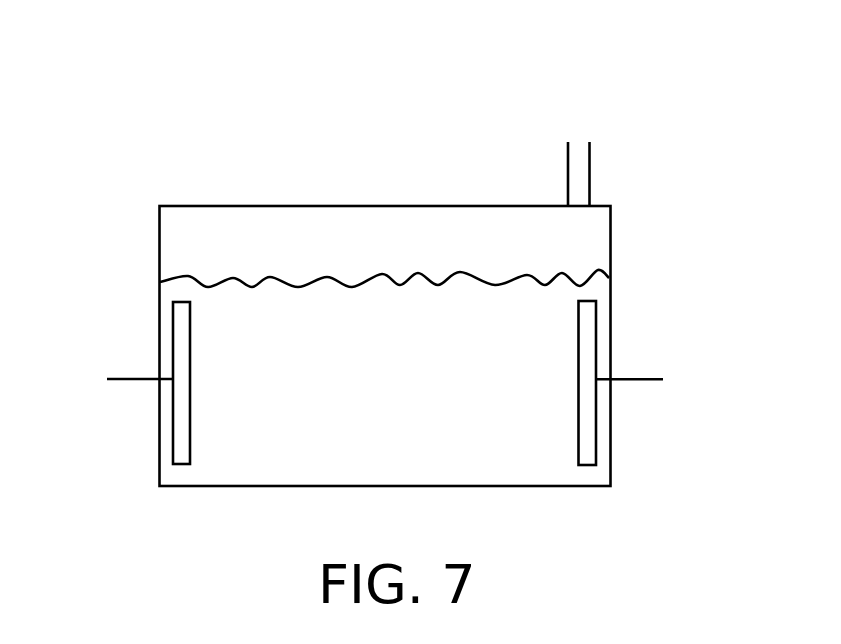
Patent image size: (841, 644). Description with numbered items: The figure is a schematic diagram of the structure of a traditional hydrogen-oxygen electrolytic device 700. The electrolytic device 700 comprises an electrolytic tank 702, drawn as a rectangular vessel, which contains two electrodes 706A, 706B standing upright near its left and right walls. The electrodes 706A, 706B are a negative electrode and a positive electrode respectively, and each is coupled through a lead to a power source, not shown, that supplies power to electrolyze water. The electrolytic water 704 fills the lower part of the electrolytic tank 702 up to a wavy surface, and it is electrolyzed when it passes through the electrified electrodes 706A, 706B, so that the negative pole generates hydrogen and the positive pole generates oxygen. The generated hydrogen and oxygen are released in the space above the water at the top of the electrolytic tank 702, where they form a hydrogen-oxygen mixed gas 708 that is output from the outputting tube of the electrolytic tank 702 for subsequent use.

The hydrogen-oxygen electrolytic device 700 is at (184, 64).
The electrolytic tank 702 is at (253, 205).
The electrolytic water 704 is at (320, 453).
The electrode 706A is at (180, 317).
The electrode 706B is at (588, 323).
The hydrogen-oxygen mixed gas 708 is at (373, 232).